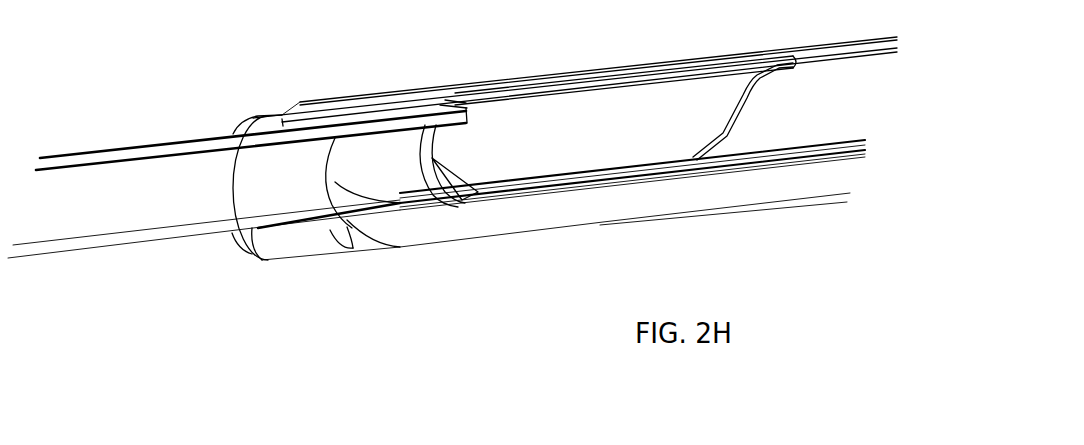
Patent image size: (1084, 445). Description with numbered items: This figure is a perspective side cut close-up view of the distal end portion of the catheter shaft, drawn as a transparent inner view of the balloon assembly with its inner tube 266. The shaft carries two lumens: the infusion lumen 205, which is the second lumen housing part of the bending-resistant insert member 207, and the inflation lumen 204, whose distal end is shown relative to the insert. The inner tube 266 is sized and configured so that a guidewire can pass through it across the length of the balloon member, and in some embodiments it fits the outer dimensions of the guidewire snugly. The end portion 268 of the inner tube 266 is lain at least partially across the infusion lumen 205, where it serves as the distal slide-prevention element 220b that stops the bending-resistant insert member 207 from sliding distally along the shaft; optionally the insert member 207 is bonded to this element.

The inner tube 266 is at (142, 149).
The infusion lumen 205 is at (823, 131).
The inflation lumen 204 is at (833, 196).
The bending-resistant insert member 207 is at (723, 133).
The end portion of inner tube 268 is at (430, 157).
The distal slide-prevention element 220b is at (455, 108).